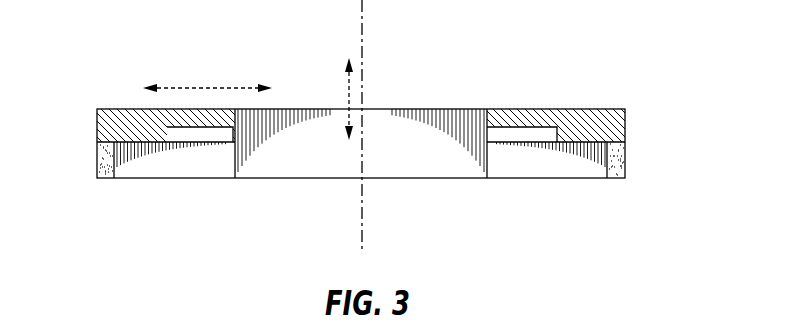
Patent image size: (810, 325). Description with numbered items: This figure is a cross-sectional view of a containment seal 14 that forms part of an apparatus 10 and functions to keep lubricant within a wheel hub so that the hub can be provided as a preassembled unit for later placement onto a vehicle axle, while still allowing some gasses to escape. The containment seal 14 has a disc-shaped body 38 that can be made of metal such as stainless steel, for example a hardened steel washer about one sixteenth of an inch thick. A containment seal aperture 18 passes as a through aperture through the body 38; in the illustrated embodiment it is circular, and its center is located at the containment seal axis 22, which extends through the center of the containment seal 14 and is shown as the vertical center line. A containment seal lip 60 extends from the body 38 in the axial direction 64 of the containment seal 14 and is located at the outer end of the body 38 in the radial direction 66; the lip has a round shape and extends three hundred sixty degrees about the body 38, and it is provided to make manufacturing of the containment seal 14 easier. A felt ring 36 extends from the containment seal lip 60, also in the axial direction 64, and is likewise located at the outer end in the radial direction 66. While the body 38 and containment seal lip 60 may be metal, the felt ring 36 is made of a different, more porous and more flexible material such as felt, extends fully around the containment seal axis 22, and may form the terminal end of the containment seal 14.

The apparatus 10 is at (665, 38).
The containment seal 14 is at (97, 125).
The containment seal aperture 18 is at (384, 126).
The containment seal axis 22 is at (362, 30).
The felt ring 36 is at (617, 160).
The body 38 is at (532, 109).
The containment seal lip 60 is at (135, 143).
The axial direction 64 is at (347, 85).
The radial direction 66 is at (185, 88).